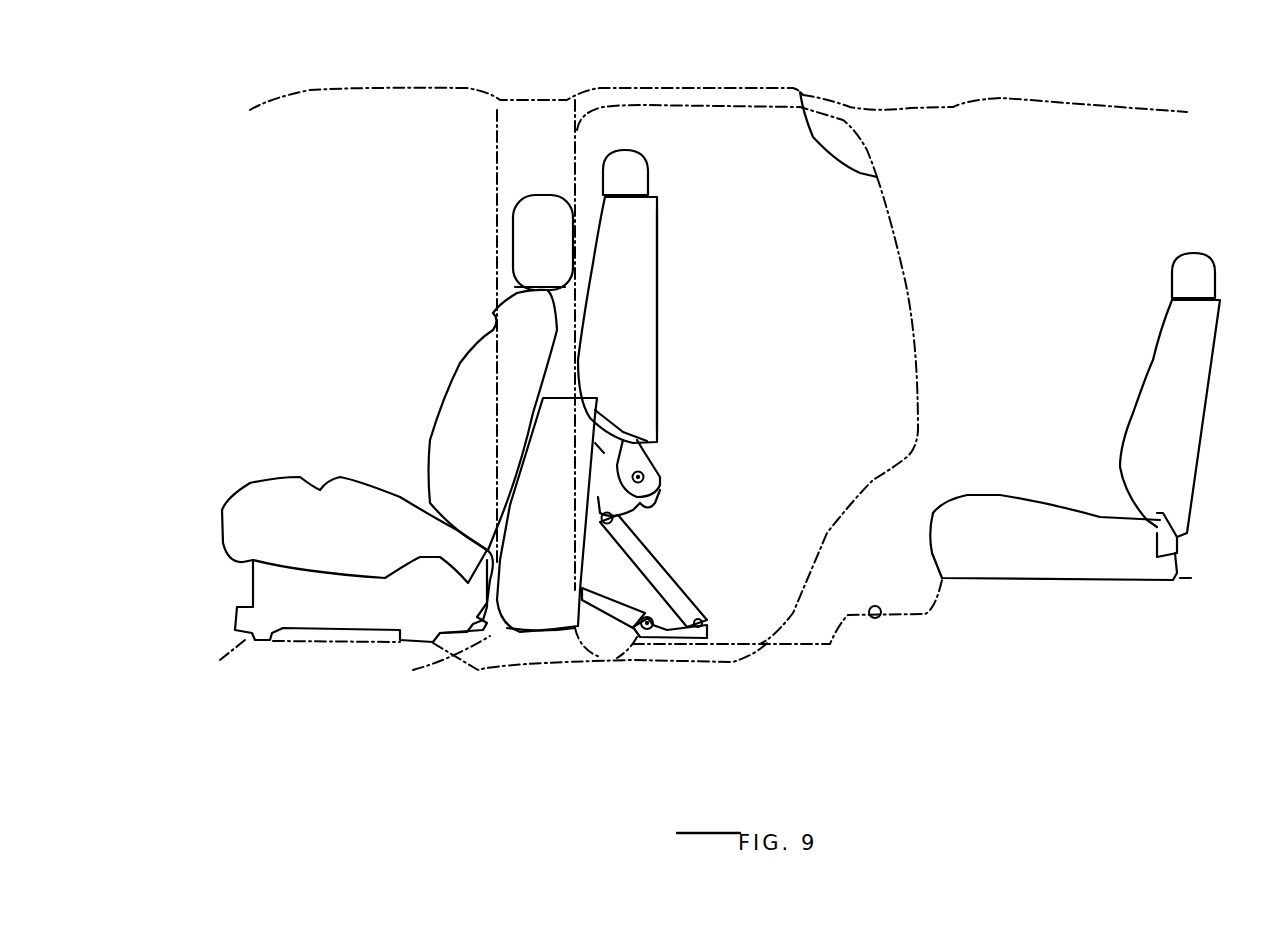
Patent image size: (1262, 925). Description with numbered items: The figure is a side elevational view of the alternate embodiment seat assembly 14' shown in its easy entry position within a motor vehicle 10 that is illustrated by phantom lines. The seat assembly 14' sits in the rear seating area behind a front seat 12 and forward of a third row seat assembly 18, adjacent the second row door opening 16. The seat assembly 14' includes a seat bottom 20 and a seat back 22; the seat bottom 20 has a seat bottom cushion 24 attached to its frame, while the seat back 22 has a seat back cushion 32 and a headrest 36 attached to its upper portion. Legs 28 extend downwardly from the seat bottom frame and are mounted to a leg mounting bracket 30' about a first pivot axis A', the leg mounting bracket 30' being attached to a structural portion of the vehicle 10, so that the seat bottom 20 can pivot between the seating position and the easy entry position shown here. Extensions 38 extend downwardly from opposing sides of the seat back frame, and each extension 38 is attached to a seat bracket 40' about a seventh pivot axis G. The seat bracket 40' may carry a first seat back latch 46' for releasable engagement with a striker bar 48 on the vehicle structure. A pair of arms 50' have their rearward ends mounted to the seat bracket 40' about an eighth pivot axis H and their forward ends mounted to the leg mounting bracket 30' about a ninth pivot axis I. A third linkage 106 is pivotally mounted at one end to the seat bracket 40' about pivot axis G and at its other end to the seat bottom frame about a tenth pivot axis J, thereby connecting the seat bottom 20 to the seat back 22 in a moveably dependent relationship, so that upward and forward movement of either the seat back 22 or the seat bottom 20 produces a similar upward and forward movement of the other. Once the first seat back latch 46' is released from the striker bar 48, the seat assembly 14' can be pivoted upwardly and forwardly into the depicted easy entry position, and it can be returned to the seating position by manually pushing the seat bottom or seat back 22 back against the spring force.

The motor vehicle 10 is at (269, 78).
The seat assembly 14' is at (747, 344).
The second row door opening 16 is at (803, 90).
The third row seat assembly 18 is at (1147, 377).
The front seat 12 is at (287, 493).
The seat bottom 20 is at (527, 634).
The seat back 22 is at (656, 226).
The seat bottom cushion 24 is at (543, 633).
The legs 28 is at (605, 618).
The leg mounting bracket 30' is at (677, 679).
The seat back cushion 32 is at (658, 248).
The headrest 36 is at (603, 157).
The extensions 38 is at (643, 462).
The seat bracket 40' is at (708, 504).
The first seat back latch 46' is at (659, 524).
The striker bar 48 is at (875, 618).
The arms 50' is at (662, 571).
The third linkage 106 is at (595, 448).
The first pivot axis A' is at (640, 658).
The seventh pivot axis G is at (644, 477).
The eighth pivot axis H is at (600, 525).
The ninth pivot axis I is at (705, 620).
The tenth pivot axis J is at (622, 465).